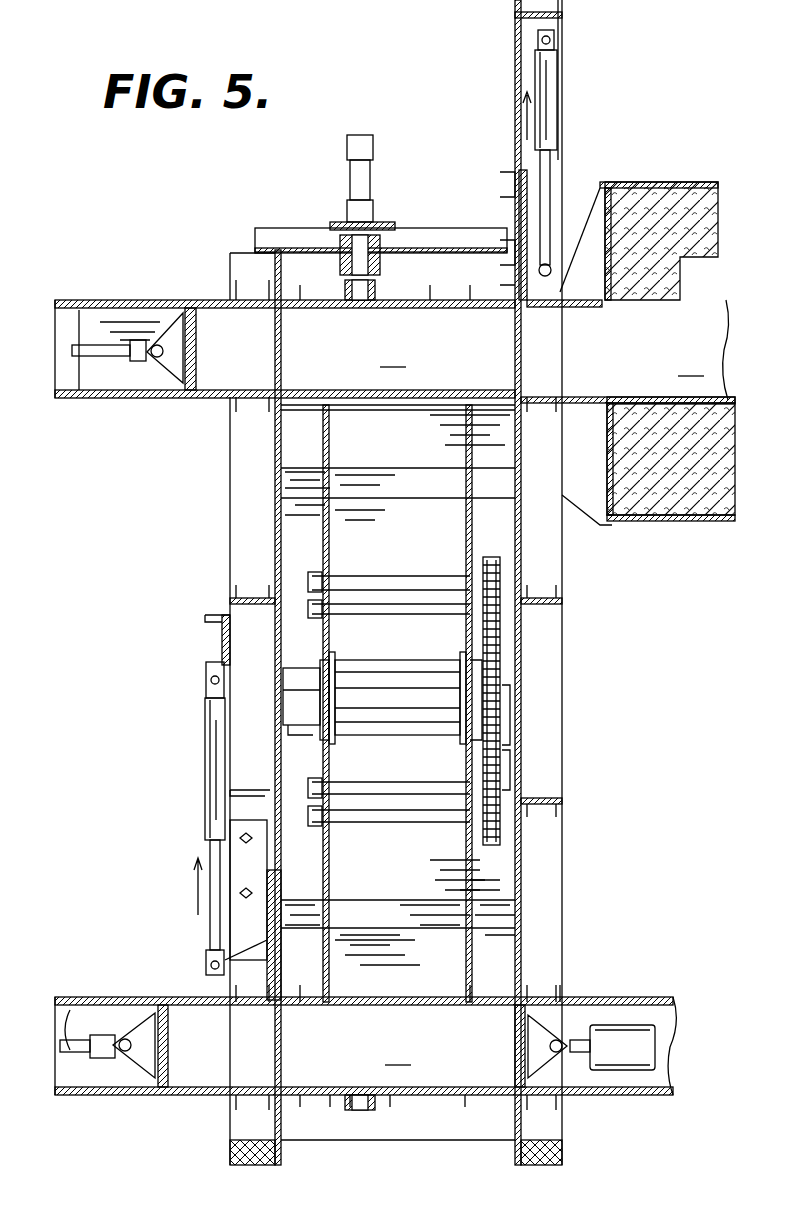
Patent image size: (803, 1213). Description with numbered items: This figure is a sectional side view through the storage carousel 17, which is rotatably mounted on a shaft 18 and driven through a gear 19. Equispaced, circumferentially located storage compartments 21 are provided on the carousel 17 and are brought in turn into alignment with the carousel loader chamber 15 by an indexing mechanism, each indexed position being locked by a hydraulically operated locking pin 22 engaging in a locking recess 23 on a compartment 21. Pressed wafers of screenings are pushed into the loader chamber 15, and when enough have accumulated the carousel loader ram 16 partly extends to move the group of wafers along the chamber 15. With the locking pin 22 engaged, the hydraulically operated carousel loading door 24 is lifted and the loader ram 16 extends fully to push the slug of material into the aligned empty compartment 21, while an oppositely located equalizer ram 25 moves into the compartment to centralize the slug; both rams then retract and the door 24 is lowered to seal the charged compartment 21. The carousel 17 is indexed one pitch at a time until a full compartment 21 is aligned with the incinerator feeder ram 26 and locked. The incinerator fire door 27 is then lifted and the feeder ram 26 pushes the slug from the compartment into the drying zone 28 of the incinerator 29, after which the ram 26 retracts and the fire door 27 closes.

The carousel loader chamber 15 is at (190, 1015).
The carousel loader ram 16 is at (190, 1060).
The storage carousel 17 is at (512, 872).
The shaft 18 is at (428, 700).
The gear 19 is at (490, 653).
The storage compartment 21 is at (292, 535).
The locking pin 22 is at (352, 262).
The locking recess 23 is at (373, 296).
The carousel loading door 24 is at (282, 1056).
The equalizer ram 25 is at (520, 1037).
The incinerator feeder ram 26 is at (196, 360).
The incinerator fire door 27 is at (524, 340).
The drying zone 28 is at (628, 351).
The incinerator 29 is at (652, 162).